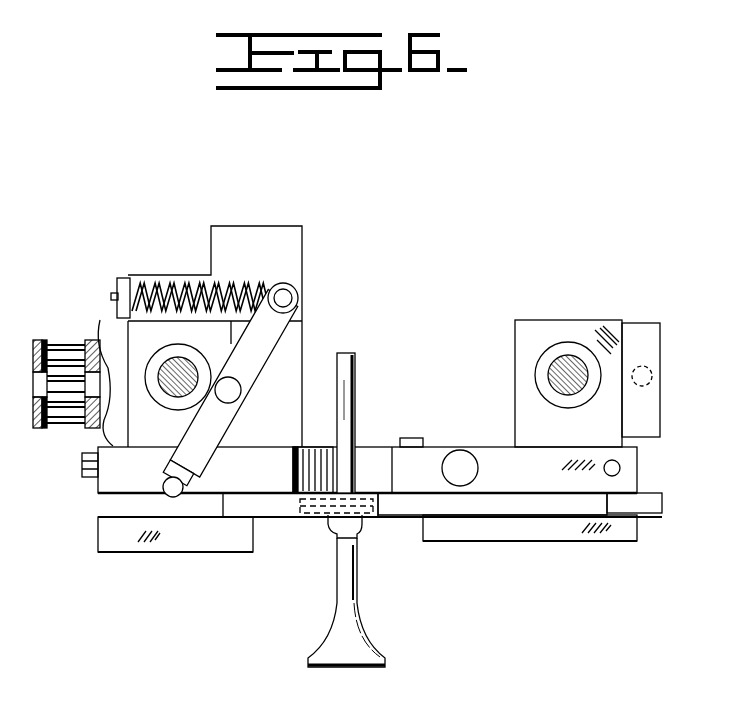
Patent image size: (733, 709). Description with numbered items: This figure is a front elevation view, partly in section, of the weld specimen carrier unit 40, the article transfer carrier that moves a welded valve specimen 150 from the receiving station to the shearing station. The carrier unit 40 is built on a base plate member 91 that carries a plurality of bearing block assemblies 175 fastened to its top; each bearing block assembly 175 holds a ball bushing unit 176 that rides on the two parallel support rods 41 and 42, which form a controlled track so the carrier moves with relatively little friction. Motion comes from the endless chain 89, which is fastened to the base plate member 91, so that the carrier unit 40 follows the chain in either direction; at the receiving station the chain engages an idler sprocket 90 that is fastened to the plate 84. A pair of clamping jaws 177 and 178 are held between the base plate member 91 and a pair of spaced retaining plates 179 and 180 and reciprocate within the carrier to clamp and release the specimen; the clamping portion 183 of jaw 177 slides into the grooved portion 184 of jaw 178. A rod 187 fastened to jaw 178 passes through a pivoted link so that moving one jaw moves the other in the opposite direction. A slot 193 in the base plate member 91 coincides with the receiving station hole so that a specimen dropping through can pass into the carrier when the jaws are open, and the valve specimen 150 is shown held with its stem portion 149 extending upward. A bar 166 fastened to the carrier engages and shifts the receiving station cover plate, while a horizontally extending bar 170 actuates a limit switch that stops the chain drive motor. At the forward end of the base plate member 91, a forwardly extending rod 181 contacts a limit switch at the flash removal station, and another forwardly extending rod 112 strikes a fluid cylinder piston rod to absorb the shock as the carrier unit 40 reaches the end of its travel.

The weld specimen carrier unit 40 is at (213, 591).
The support rod 41 is at (572, 390).
The support rod 42 is at (168, 356).
The plate 84 is at (105, 437).
The endless chain 89 is at (53, 312).
The idler sprocket 90 is at (48, 378).
The base plate member 91 is at (532, 480).
The forwardly extending rod 112 is at (456, 460).
The stem portion 149 is at (356, 366).
The welded valve specimen 150 is at (363, 602).
The bar 166 is at (233, 203).
The horizontally extending bar 170 is at (652, 375).
The bearing block assembly 175 is at (170, 443).
The ball bushing unit 176 is at (183, 352).
The clamping jaw 177 is at (260, 473).
The clamping jaw 178 is at (562, 507).
The retaining plate 179 is at (198, 543).
The retaining plate 180 is at (522, 532).
The forwardly extending rod 181 is at (622, 465).
The clamping portion 183 is at (368, 523).
The grooved portion 184 is at (317, 512).
The rod 187 is at (410, 437).
The slot 193 is at (302, 452).